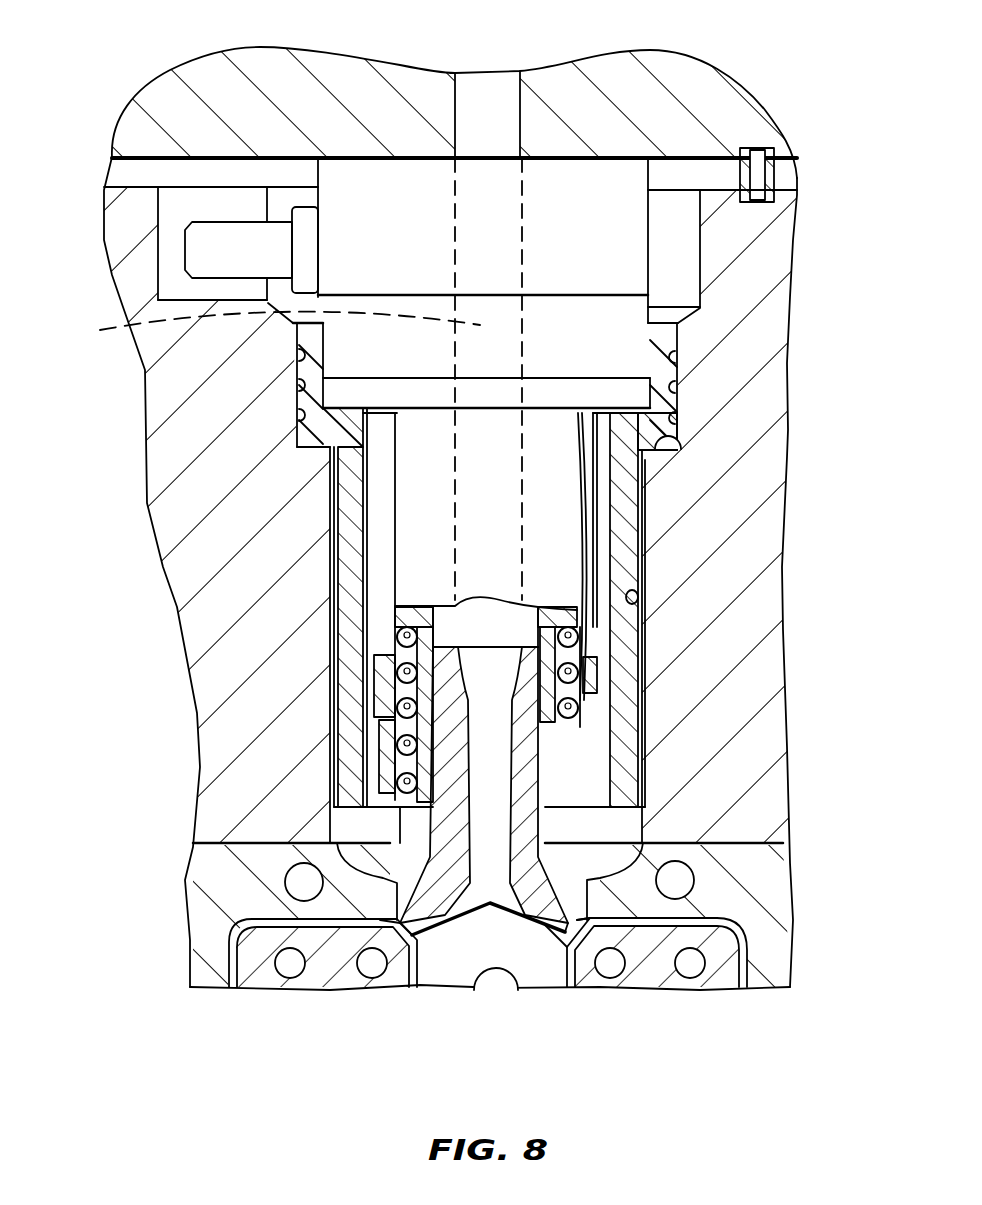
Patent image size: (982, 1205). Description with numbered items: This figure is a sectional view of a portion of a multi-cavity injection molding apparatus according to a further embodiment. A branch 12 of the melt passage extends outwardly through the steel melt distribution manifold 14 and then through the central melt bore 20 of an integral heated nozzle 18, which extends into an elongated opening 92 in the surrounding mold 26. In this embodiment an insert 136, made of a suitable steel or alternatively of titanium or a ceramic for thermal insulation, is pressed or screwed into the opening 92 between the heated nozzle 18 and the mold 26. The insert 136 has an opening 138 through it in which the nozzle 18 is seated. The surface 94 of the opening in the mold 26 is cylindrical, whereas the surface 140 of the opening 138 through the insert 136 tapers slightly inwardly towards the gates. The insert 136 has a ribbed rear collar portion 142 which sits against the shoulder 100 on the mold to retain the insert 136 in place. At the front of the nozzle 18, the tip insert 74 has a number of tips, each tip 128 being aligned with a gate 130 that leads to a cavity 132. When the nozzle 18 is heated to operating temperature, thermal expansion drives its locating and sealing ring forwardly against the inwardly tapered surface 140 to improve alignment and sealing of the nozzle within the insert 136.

The branch 12 is at (483, 98).
The melt distribution manifold 14 is at (722, 98).
The heated nozzle 18 is at (623, 243).
The central melt bore 20 is at (267, 332).
The mold 26 is at (758, 324).
The ribbed rear collar portion 142 is at (652, 378).
The shoulder 100 is at (656, 438).
The elongated opening 92 is at (600, 482).
The insert 136 is at (627, 517).
The opening 138 is at (600, 555).
The surface 94 is at (640, 602).
The tip insert 74 is at (523, 738).
The surface 140 is at (648, 838).
The tip 128 is at (565, 923).
The gate 130 is at (582, 920).
The cavity 132 is at (743, 987).